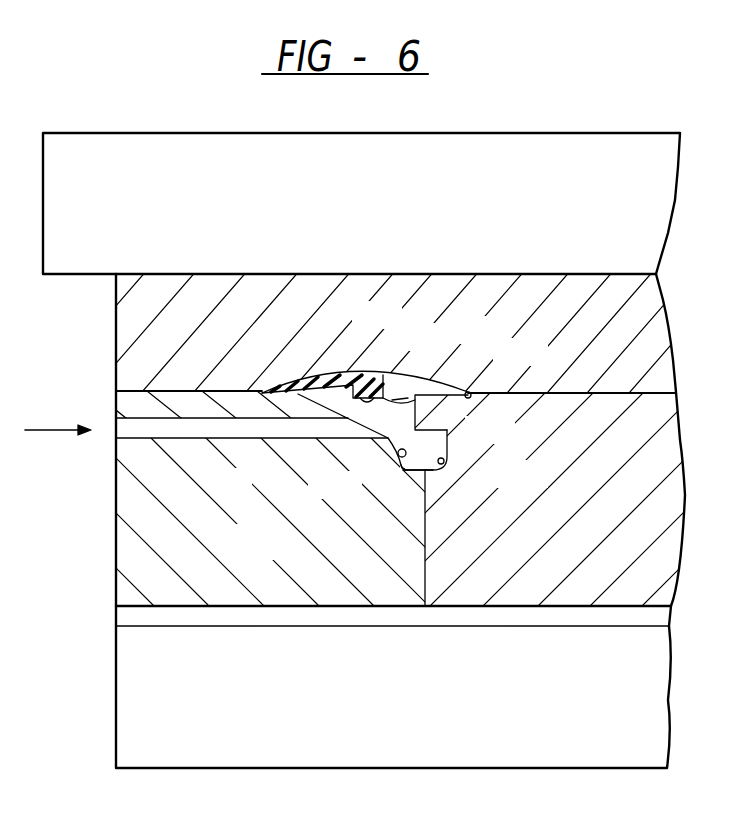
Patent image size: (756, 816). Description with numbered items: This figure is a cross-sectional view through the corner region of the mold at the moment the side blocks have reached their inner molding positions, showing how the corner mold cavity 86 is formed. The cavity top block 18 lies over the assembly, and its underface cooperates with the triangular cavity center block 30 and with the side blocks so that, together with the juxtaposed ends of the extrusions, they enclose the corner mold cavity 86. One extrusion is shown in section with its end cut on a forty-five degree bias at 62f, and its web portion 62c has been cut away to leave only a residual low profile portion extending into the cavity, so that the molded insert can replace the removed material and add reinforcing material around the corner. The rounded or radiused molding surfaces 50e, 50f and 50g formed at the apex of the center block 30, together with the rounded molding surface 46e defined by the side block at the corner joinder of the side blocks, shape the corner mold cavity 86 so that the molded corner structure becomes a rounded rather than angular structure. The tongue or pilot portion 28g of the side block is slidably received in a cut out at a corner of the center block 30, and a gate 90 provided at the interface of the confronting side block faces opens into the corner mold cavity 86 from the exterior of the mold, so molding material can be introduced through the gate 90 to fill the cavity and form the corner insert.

The cavity top block 18 is at (103, 367).
The cavity center block 30 is at (648, 533).
The tongue or pilot portion of side block 28g is at (266, 555).
The gate 90 is at (250, 432).
The rounded molding surface 50e is at (468, 392).
The rounded molding surface 50f is at (448, 429).
The rounded molding surface 50g is at (448, 459).
The bias-cut end of extrusion 62f is at (344, 384).
The web portion of extrusion 62c is at (399, 390).
The corner mold cavity 86 is at (398, 404).
The rounded molding surface 46e is at (398, 456).